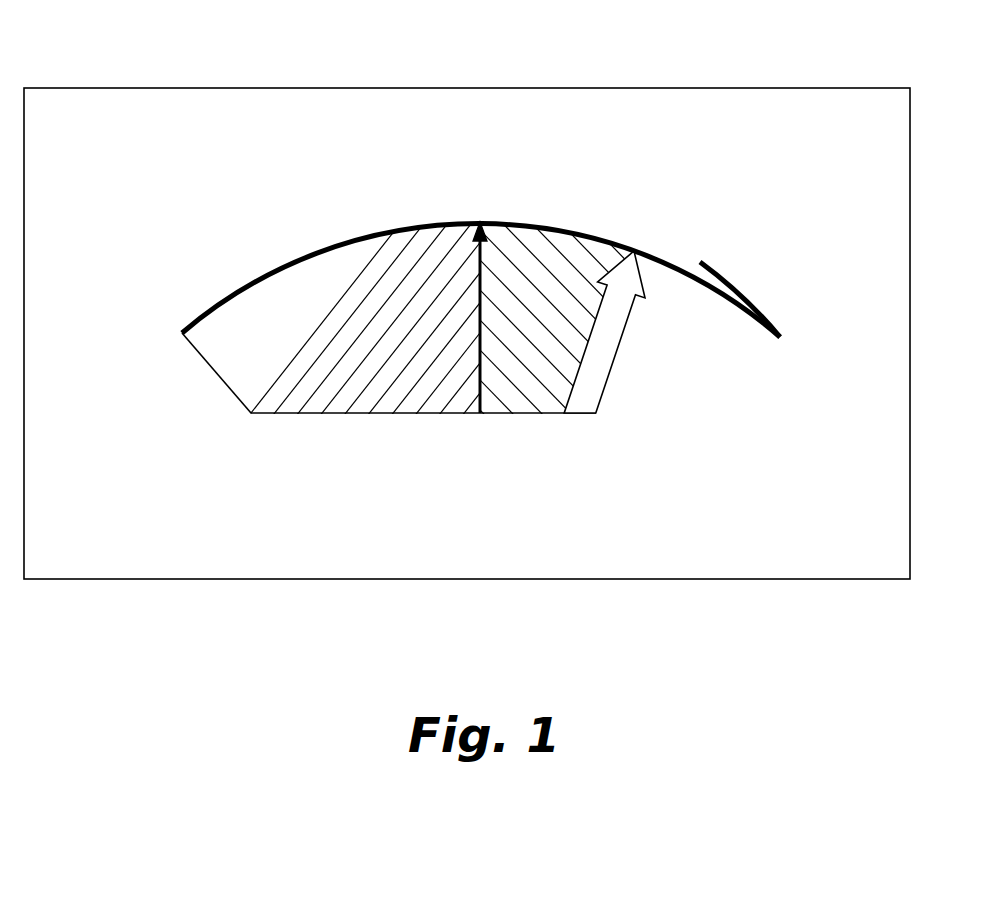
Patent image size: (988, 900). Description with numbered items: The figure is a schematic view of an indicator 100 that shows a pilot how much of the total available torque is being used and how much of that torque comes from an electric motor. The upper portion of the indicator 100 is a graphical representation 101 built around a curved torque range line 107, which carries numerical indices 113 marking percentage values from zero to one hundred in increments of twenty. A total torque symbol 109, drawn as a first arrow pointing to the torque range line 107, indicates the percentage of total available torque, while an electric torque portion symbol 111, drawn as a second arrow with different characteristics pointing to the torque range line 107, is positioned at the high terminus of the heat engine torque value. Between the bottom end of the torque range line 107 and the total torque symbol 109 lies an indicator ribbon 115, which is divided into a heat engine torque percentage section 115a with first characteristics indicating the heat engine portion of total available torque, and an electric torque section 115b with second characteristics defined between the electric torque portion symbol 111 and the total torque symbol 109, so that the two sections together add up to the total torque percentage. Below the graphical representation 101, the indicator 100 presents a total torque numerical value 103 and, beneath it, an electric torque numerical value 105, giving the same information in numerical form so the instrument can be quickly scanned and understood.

The indicator 100 is at (117, 20).
The graphical representation 101 is at (227, 290).
The total torque numerical value 103 is at (382, 468).
The electric torque numerical value 105 is at (365, 512).
The torque range line 107 is at (728, 293).
The total torque symbol 109 is at (598, 383).
The electric torque portion symbol 111 is at (482, 400).
The numerical indices 113 is at (237, 212).
The indicator ribbon 115 is at (470, 343).
The heat engine torque percentage section 115a is at (341, 264).
The electric torque section 115b is at (515, 243).